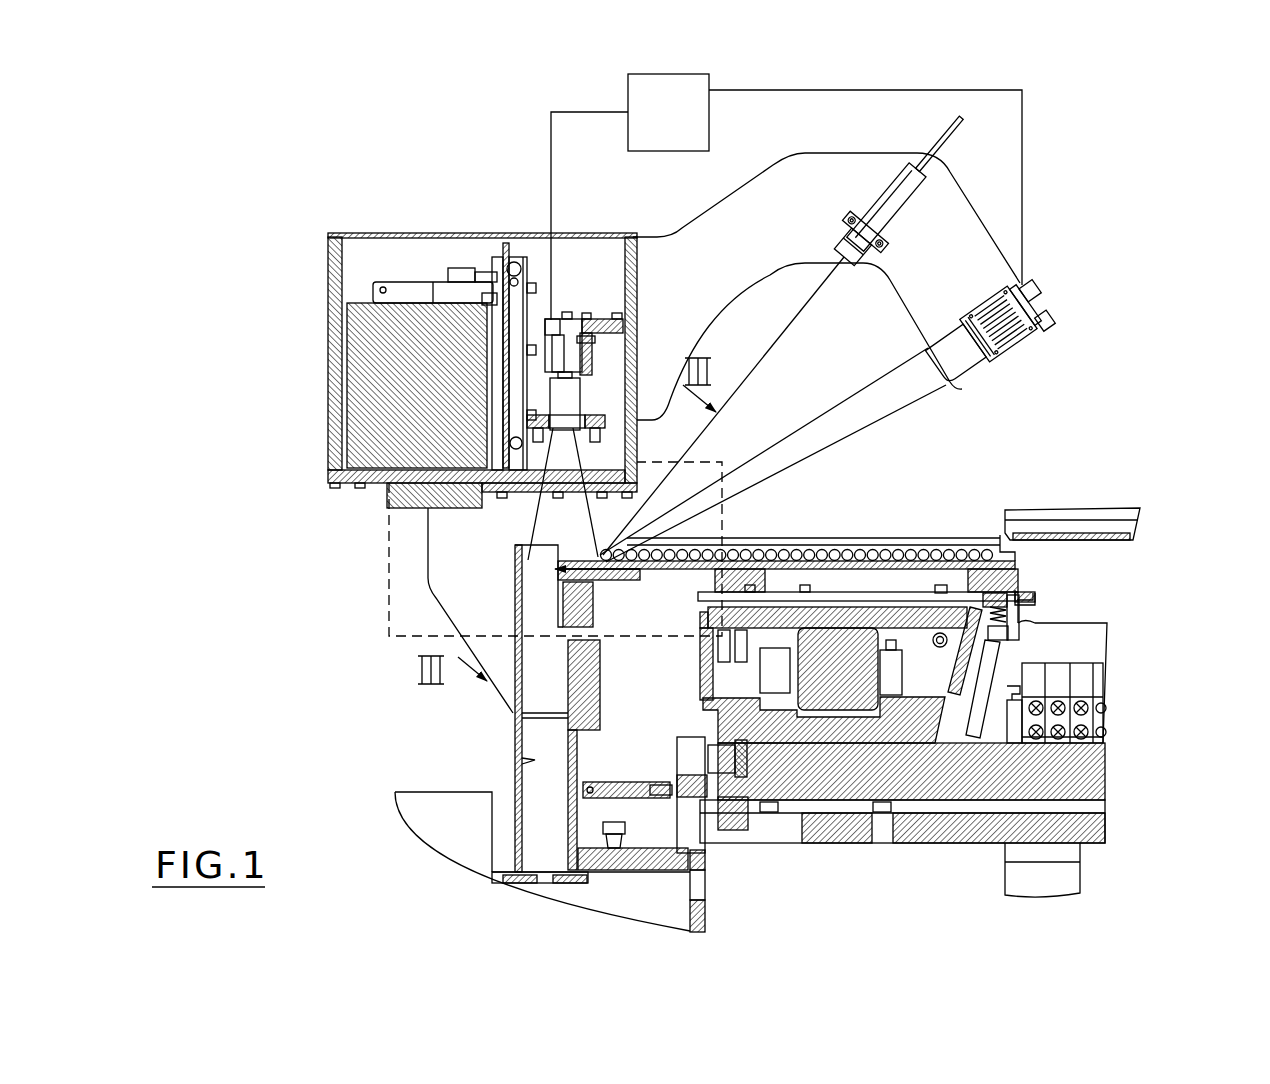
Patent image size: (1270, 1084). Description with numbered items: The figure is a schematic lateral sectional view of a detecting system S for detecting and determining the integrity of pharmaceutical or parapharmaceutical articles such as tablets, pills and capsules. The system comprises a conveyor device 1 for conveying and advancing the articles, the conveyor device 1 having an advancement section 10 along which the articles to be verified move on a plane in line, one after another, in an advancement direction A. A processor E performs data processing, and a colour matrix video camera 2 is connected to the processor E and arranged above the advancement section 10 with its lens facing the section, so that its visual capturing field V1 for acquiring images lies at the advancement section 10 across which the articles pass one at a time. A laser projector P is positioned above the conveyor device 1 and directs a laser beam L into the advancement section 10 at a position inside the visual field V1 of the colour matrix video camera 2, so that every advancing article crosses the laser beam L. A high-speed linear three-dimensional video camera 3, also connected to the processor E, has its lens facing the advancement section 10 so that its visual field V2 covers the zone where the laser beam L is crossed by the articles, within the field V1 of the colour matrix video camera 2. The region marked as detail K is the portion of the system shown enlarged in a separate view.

The conveyor device 1 is at (860, 572).
The colour matrix video camera 2 is at (560, 402).
The high-speed linear three-dimensional video camera 3 is at (1040, 340).
The advancement section 10 is at (613, 590).
The processor E is at (786, 197).
The laser projector P is at (893, 210).
The detecting system S is at (1068, 437).
The detail K is at (389, 548).
The laser beam L is at (648, 497).
The advancement direction A is at (610, 589).
The visual capturing field V1 is at (548, 553).
The visual field V2 is at (618, 548).